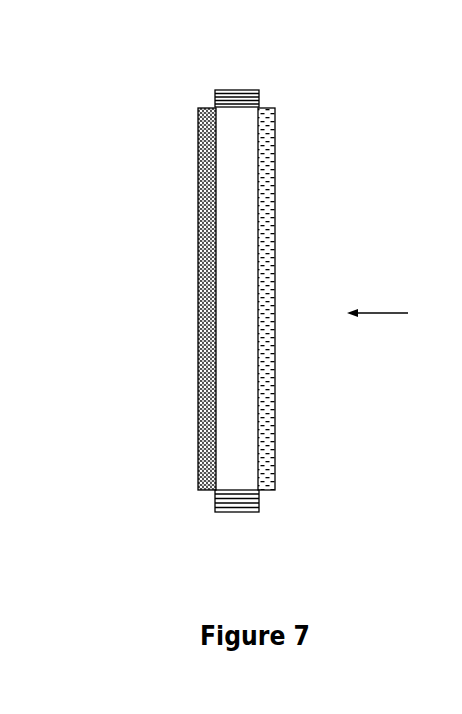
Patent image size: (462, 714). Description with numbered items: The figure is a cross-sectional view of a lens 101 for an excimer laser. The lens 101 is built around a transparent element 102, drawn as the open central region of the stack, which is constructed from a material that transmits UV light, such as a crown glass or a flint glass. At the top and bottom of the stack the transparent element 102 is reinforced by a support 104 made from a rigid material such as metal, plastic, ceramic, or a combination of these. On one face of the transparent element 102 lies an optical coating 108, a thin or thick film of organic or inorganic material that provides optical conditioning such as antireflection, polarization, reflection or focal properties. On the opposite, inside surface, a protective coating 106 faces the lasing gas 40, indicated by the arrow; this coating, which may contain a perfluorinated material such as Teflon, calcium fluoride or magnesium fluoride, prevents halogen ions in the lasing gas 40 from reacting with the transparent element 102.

The lens 101 is at (63, 108).
The transparent element 102 is at (311, 288).
The support 104 is at (308, 306).
The protective coating 106 is at (345, 299).
The optical coating 108 is at (123, 299).
The lasing gas 40 is at (396, 312).